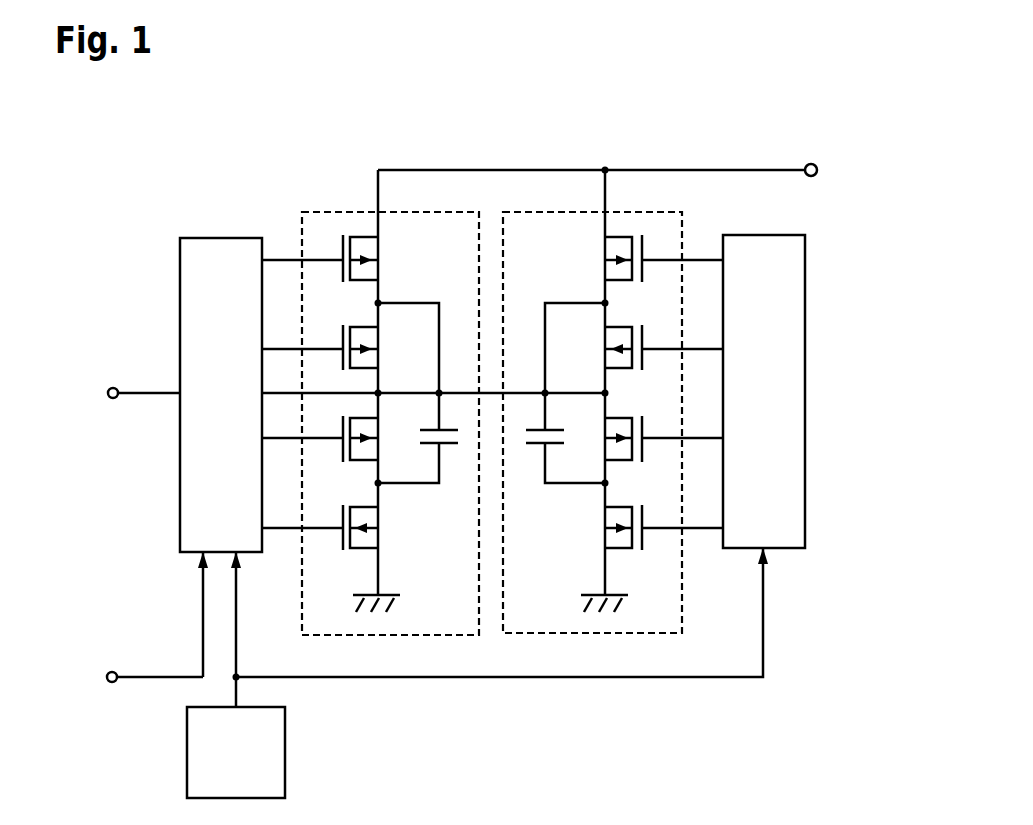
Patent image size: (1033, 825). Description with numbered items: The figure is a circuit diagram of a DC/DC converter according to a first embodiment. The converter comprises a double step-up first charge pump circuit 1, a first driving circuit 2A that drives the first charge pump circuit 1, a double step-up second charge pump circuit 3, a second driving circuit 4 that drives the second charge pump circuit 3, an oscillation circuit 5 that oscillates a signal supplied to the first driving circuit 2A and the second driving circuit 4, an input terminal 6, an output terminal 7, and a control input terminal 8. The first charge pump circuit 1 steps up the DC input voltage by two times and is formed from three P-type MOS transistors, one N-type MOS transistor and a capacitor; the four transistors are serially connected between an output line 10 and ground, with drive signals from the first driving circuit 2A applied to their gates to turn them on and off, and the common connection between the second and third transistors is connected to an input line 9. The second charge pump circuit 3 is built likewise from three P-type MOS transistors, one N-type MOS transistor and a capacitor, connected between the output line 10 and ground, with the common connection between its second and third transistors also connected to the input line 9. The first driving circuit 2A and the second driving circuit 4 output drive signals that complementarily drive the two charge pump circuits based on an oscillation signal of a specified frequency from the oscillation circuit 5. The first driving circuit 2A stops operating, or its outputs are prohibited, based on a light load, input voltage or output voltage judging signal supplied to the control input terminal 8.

The first charge pump circuit 1 is at (329, 212).
The first driving circuit 2A is at (210, 238).
The second charge pump circuit 3 is at (682, 212).
The second driving circuit 4 is at (805, 280).
The oscillation circuit 5 is at (285, 748).
The input terminal 6 is at (114, 388).
The output terminal 7 is at (812, 164).
The control input terminal 8 is at (113, 672).
The input line 9 is at (148, 398).
The output line 10 is at (707, 170).